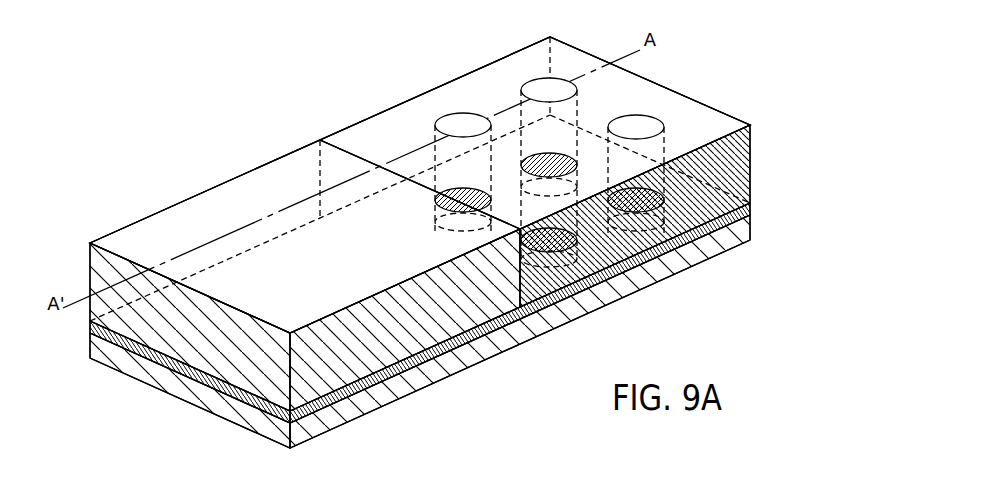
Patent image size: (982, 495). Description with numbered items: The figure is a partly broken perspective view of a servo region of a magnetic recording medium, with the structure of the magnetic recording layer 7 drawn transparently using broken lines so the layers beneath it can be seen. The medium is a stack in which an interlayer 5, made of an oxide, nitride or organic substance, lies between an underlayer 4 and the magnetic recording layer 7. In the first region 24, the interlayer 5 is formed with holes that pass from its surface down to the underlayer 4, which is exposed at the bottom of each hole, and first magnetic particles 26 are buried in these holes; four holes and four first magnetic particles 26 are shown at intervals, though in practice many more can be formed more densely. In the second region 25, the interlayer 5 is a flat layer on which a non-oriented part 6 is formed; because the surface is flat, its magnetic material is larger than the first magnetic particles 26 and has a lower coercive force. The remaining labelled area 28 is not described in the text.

The underlayer 4 is at (92, 357).
The interlayer 5 is at (92, 332).
The non-oriented part 6 is at (239, 200).
The magnetic recording layer 7 is at (92, 276).
The first region 24 is at (549, 31).
The second region 25 is at (314, 139).
The first magnetic particles 26 is at (640, 122).
The hole forming region 28 is at (500, 88).